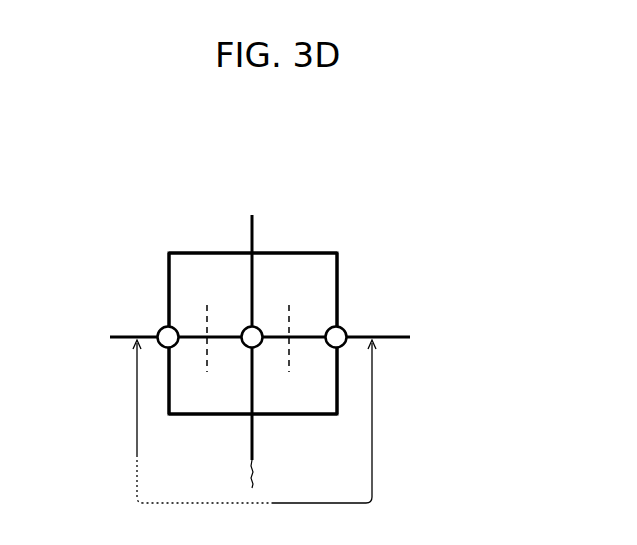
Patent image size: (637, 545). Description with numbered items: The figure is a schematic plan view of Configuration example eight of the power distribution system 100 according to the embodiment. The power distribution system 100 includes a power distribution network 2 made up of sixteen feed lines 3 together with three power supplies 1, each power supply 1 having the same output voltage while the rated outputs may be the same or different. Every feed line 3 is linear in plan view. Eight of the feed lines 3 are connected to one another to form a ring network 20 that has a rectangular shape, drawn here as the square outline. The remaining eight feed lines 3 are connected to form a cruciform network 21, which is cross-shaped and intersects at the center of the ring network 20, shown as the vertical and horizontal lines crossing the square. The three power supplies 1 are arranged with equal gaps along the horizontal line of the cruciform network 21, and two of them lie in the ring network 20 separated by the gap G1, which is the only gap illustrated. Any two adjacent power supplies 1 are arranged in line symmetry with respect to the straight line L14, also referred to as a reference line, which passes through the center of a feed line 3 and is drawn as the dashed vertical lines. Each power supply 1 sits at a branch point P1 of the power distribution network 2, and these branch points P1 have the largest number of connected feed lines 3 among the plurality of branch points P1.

The power distribution system 100 is at (317, 174).
The ring network 20 is at (310, 250).
The power distribution network 2 is at (342, 271).
The feed line 3 is at (182, 254).
The power supply 1 is at (160, 330).
The cruciform network 21 is at (384, 343).
The branch point P1 is at (350, 329).
The straight line L14 is at (323, 416).
The gap G1 is at (274, 504).